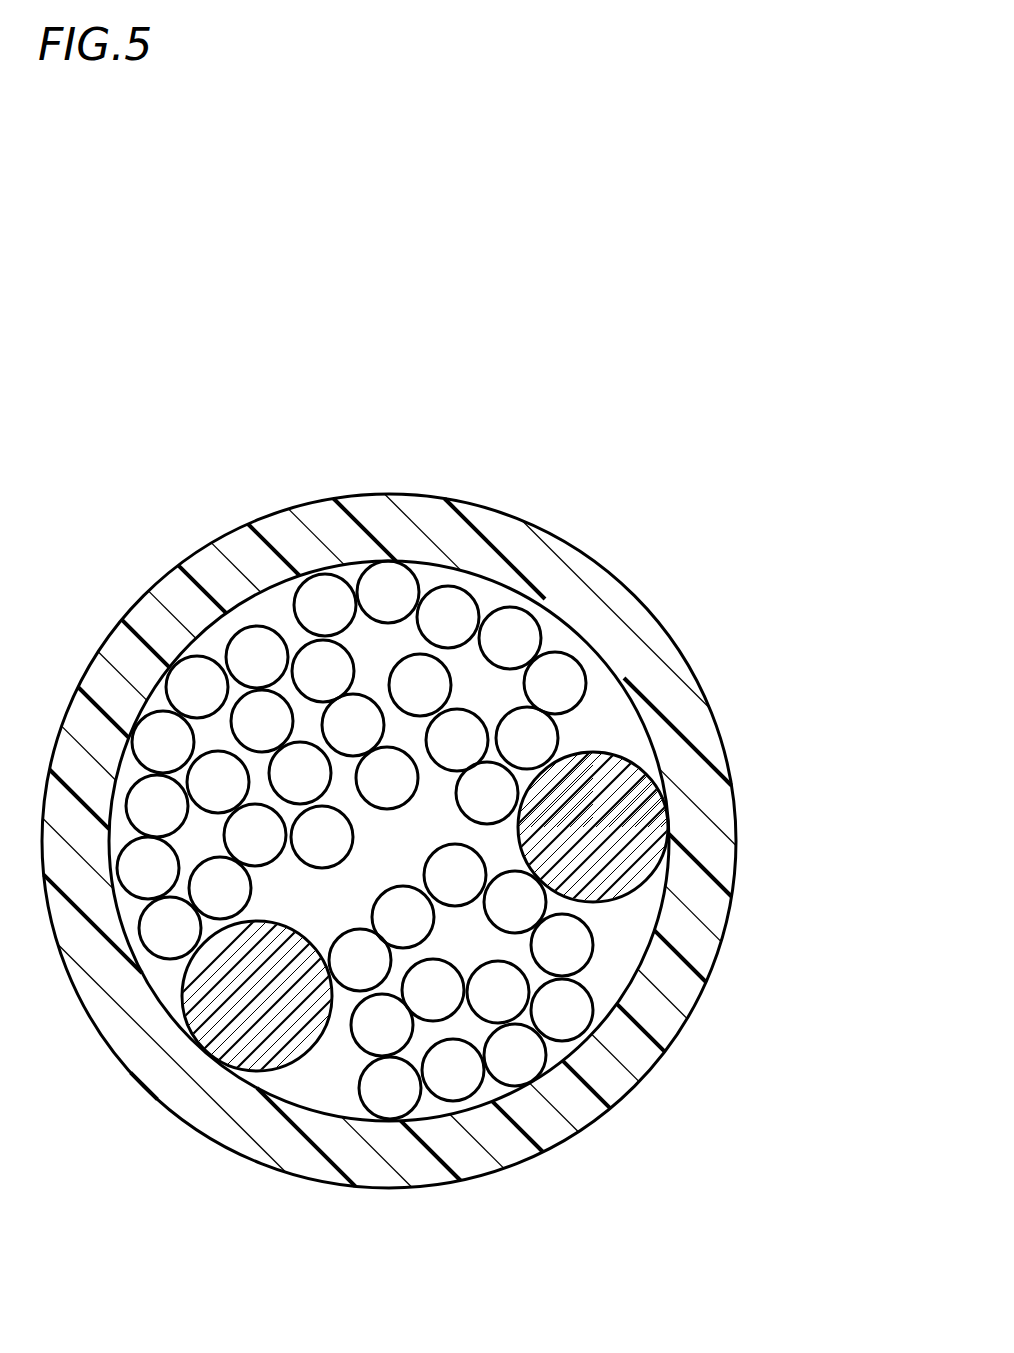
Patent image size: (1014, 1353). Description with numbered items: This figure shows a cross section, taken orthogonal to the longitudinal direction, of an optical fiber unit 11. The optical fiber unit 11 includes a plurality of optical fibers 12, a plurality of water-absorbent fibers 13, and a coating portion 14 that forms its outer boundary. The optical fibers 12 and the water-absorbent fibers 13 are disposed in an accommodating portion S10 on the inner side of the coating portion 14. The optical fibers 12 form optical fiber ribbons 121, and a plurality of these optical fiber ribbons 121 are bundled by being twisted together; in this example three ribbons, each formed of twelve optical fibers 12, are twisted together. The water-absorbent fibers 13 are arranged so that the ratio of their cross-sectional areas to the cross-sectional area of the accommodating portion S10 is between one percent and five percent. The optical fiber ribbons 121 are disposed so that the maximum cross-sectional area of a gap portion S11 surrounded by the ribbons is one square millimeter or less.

The optical fiber unit 11 is at (668, 335).
The optical fiber 12 is at (518, 627).
The optical fiber ribbon 121 is at (427, 580).
The water-absorbent fiber 13 is at (617, 830).
The coating portion 14 is at (680, 990).
The accommodating portion S10 is at (285, 625).
The gap portion S11 is at (365, 873).